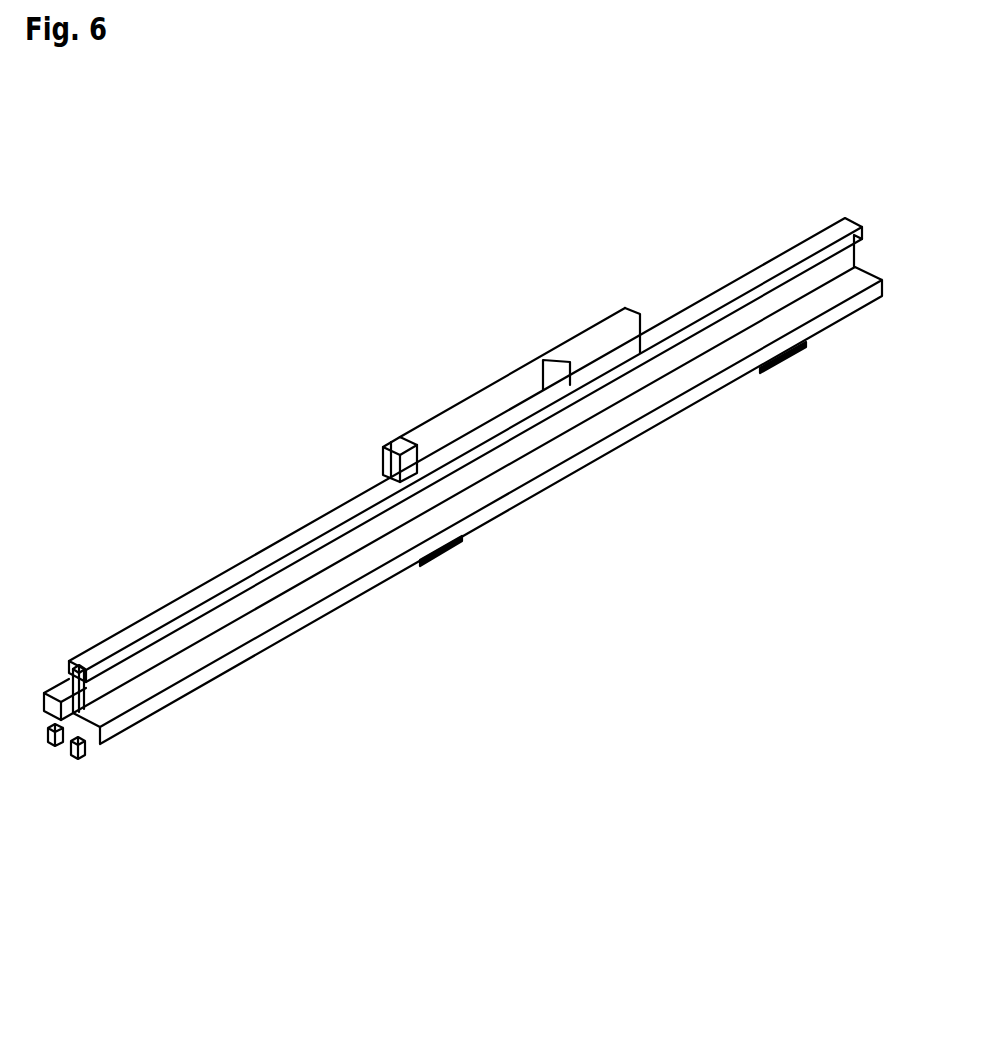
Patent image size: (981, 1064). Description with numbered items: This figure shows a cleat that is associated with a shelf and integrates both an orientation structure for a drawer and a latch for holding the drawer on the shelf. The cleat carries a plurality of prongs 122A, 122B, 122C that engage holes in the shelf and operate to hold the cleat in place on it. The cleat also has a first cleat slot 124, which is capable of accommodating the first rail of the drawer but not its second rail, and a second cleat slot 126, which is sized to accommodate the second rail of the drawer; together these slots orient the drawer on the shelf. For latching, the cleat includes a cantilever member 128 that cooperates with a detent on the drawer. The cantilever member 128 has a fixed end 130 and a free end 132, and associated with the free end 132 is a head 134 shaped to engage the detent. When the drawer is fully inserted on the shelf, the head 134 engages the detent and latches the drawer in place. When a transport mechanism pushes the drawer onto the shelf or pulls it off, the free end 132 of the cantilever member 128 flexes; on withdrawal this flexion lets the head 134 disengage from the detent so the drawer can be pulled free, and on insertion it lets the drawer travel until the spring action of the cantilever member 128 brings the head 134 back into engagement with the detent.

The prong 122A is at (58, 740).
The prong 122B is at (447, 560).
The prong 122C is at (803, 352).
The first cleat slot 124 is at (64, 688).
The second cleat slot 126 is at (100, 687).
The cantilever member 128 is at (499, 363).
The fixed end 130 is at (628, 306).
The free end 132 is at (384, 425).
The head 134 is at (382, 483).